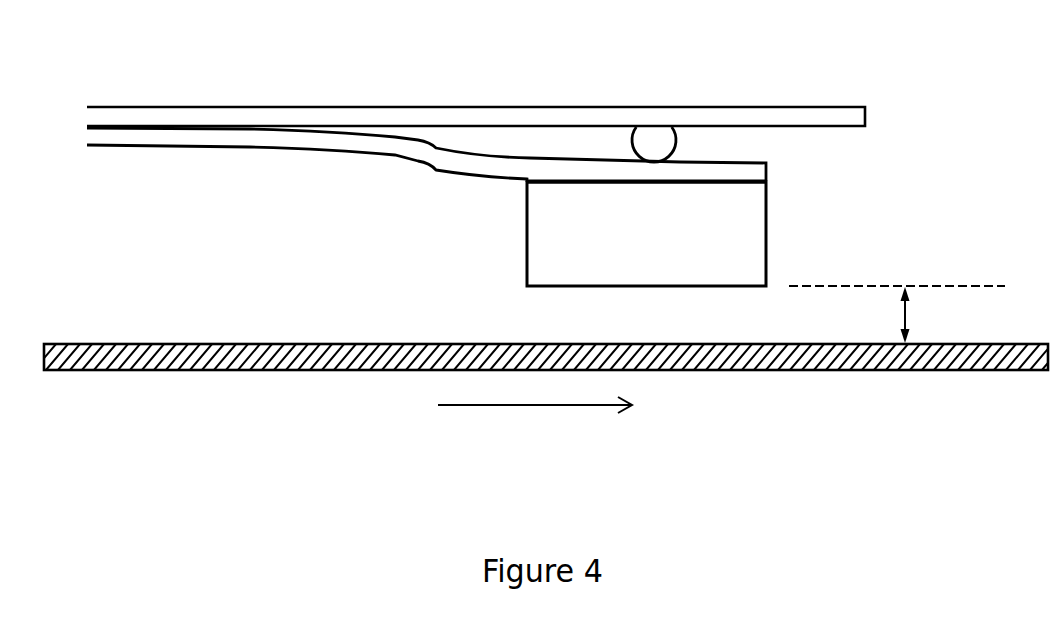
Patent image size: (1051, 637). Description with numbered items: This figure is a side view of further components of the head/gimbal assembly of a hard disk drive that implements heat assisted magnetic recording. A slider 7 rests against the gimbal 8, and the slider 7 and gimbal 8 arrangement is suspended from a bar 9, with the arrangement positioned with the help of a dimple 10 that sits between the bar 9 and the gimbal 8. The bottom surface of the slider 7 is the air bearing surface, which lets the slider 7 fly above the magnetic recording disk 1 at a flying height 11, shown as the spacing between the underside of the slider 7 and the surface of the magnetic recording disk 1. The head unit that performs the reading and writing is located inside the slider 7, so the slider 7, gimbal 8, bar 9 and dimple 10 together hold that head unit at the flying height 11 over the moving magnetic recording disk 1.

The magnetic recording disk 1 is at (910, 370).
The slider 7 is at (646, 234).
The gimbal 8 is at (350, 157).
The bar 9 is at (535, 104).
The dimple 10 is at (672, 127).
The flying height 11 is at (897, 314).